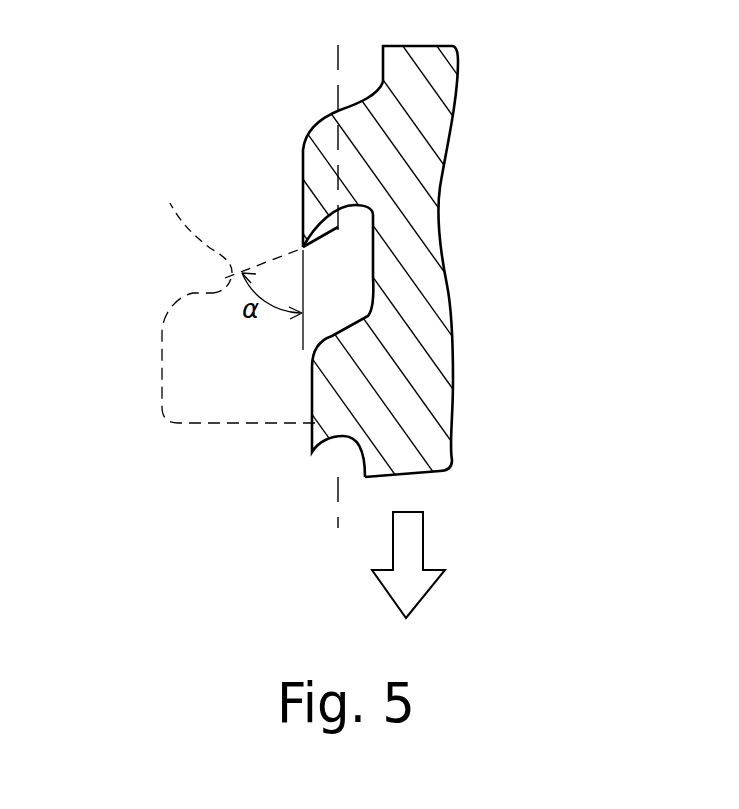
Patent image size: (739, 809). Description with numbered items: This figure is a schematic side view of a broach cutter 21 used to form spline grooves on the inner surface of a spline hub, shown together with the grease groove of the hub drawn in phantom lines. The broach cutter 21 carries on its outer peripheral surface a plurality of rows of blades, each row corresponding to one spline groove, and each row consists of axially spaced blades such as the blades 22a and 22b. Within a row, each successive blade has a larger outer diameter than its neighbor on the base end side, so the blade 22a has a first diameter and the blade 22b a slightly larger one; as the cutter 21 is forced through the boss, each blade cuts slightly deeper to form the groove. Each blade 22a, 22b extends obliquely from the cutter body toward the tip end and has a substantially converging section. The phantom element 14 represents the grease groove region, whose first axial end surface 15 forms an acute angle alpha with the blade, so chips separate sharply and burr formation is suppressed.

The mating member 14 is at (185, 353).
The first axial end surface 15 is at (190, 231).
The broach cutter 21 is at (410, 195).
The blade 22a is at (322, 392).
The blade 22b is at (307, 157).